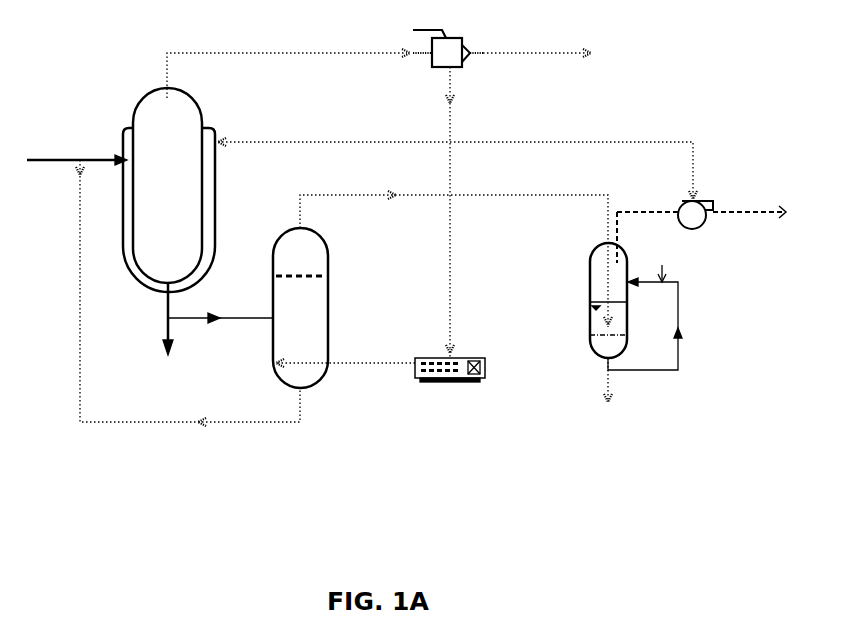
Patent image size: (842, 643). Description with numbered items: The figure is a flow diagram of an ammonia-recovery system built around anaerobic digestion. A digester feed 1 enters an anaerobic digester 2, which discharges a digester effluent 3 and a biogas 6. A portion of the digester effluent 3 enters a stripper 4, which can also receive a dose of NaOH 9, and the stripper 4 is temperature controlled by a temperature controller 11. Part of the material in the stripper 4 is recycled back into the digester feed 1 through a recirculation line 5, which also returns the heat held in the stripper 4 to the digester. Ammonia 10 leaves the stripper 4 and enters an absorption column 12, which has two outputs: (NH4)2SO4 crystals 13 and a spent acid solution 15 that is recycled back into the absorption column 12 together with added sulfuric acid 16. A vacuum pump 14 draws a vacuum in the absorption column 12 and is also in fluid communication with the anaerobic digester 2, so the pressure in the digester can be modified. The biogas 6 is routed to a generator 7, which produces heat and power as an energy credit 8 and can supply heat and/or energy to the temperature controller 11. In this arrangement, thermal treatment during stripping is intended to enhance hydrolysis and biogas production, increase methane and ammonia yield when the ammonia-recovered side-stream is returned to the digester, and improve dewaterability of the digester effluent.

The digester feed 1 is at (77, 149).
The anaerobic digester 2 is at (169, 190).
The digester effluent 3 is at (168, 335).
The stripper 4 is at (248, 308).
The recirculation line 5 is at (174, 293).
The biogas 6 is at (288, 61).
The generator 7 is at (453, 191).
The energy credit 8 is at (554, 55).
The NaOH 9 is at (331, 265).
The ammonia 10 is at (456, 248).
The temperature controller 11 is at (380, 388).
The absorption column 12 is at (585, 300).
The (NH4)2SO4 crystals 13 is at (608, 398).
The vacuum pump 14 is at (502, 200).
The spent acid solution 15 is at (667, 324).
The sulfuric acid 16 is at (662, 259).